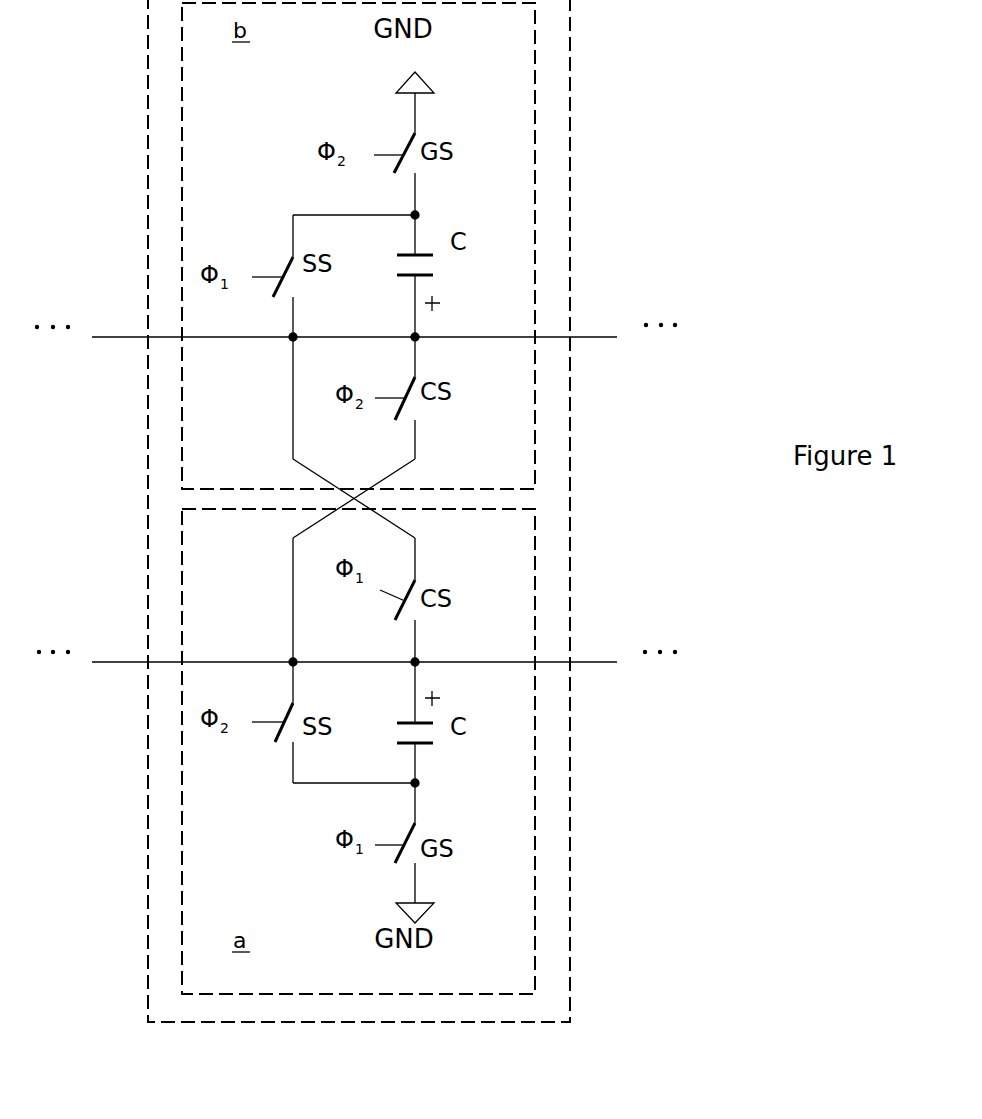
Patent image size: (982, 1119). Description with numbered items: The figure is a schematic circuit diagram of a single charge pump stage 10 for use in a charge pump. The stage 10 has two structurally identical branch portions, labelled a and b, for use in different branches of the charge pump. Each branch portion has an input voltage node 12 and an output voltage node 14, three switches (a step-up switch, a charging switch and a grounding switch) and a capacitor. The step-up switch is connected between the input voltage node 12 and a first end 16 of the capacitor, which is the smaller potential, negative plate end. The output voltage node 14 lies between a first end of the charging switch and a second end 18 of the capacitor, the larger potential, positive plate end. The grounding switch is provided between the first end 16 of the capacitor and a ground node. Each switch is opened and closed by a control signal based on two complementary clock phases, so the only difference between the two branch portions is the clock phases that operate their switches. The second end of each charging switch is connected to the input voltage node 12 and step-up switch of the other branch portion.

The charge pump stage 10 is at (147, 153).
The input voltage node 12 is at (290, 340).
The output voltage node 14 is at (410, 340).
The first end of the capacitor 16 is at (417, 237).
The second end of the capacitor 18 is at (410, 292).